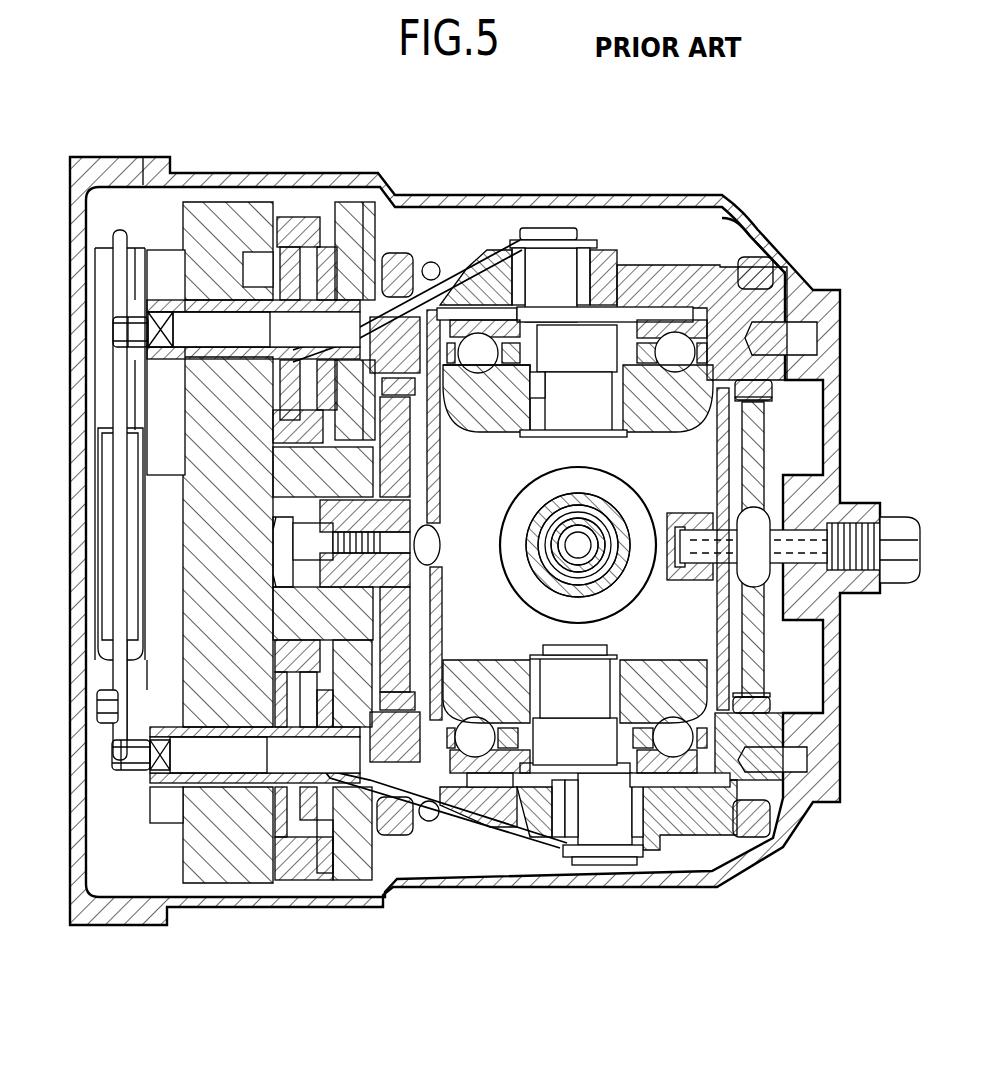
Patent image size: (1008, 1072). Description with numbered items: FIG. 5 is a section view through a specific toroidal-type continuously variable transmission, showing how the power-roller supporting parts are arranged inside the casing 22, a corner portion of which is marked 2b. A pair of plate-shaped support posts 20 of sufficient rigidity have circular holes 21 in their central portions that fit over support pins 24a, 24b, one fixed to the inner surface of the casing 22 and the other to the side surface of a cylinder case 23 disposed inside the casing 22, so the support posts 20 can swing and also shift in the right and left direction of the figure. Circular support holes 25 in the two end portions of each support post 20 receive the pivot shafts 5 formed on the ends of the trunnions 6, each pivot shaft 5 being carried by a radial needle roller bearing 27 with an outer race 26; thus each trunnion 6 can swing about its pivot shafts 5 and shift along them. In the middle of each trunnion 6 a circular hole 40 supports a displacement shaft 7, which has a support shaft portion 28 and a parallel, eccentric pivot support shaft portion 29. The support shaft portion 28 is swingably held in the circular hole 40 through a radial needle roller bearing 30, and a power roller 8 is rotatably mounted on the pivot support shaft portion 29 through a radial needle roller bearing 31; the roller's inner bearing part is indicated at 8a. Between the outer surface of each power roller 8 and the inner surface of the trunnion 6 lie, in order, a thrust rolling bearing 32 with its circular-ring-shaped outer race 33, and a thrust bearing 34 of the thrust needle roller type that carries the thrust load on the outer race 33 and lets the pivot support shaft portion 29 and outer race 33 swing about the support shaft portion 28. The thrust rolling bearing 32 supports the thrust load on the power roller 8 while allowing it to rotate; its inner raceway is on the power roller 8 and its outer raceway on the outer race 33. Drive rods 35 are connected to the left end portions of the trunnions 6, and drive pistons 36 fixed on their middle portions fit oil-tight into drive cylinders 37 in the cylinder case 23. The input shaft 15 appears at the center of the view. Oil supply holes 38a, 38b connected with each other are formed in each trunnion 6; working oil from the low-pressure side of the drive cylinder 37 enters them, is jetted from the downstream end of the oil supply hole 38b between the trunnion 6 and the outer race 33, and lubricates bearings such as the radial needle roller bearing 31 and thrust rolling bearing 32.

The housing corner portion 2b is at (720, 273).
The pivot shaft 5 is at (774, 292).
The trunnion 6 is at (690, 270).
The displacement shaft 7 is at (549, 250).
The power roller 8 is at (660, 437).
The bearing inner race 8a is at (690, 425).
The input shaft 15 is at (527, 545).
The support post 20 is at (753, 650).
The circular hole 21 is at (760, 520).
The casing 22 is at (763, 230).
The cylinder case 23 is at (355, 215).
The support pin 24a is at (760, 575).
The support pin 24b is at (438, 566).
The support hole 25 is at (773, 280).
The outer race 26 is at (440, 405).
The radial needle roller bearing 27 is at (767, 408).
The support shaft portion 28 is at (560, 263).
The pivot support shaft portion 29 is at (600, 430).
The radial needle roller bearing 30 is at (567, 270).
The radial needle roller bearing 31 is at (530, 413).
The thrust rolling bearing 32 is at (530, 350).
The outer race 33 is at (667, 318).
The thrust bearing 34 is at (633, 313).
The drive rod 35 is at (217, 320).
The drive piston 36 is at (285, 258).
The drive cylinder 37 is at (312, 215).
The oil supply hole 38a is at (490, 800).
The oil supply hole 38b is at (520, 800).
The circular hole 40 is at (533, 270).